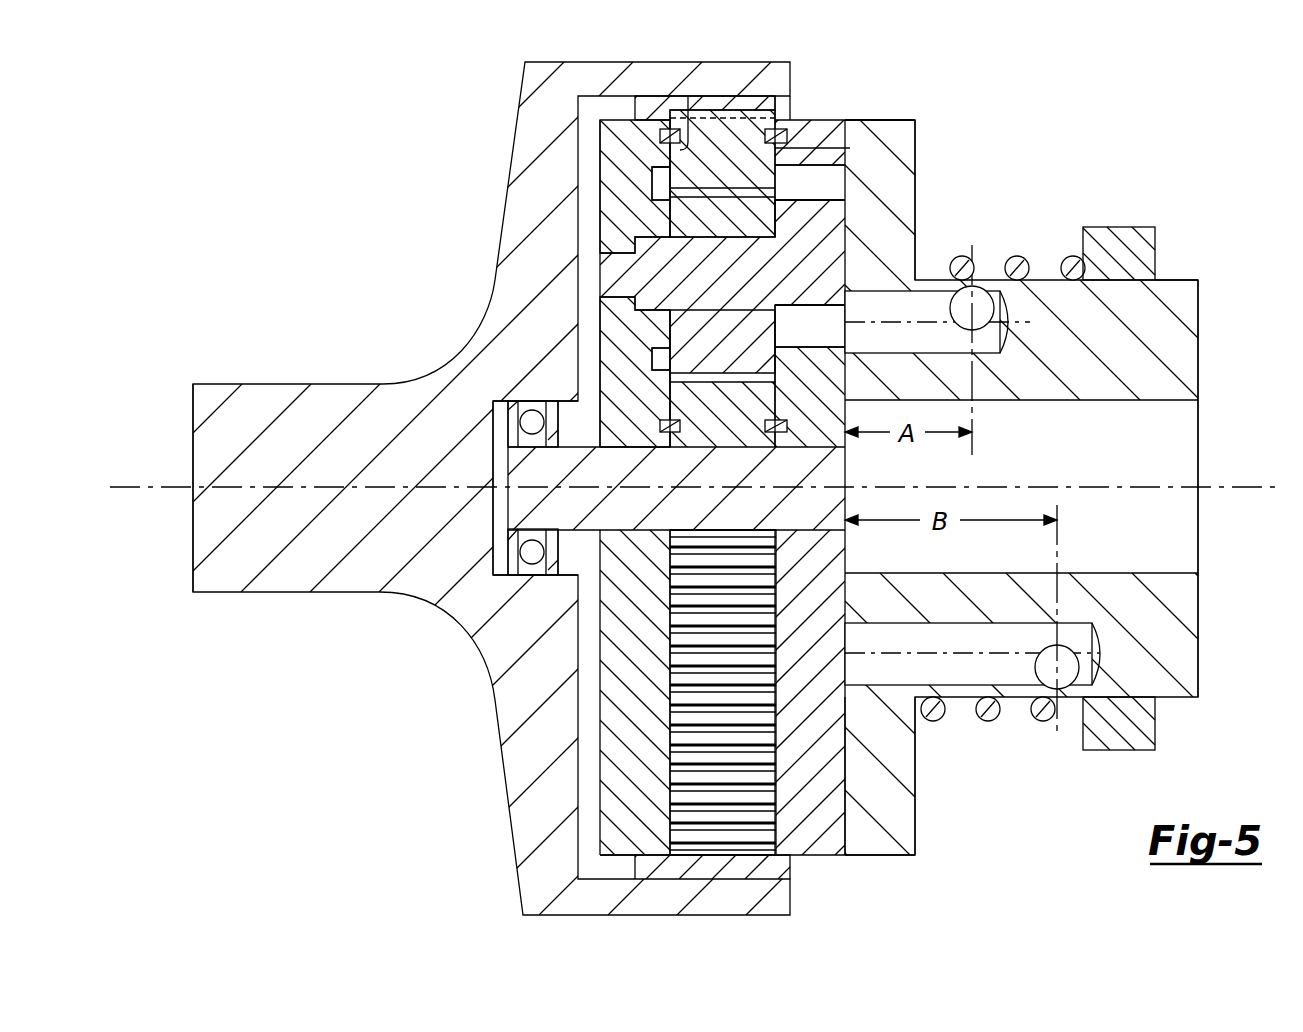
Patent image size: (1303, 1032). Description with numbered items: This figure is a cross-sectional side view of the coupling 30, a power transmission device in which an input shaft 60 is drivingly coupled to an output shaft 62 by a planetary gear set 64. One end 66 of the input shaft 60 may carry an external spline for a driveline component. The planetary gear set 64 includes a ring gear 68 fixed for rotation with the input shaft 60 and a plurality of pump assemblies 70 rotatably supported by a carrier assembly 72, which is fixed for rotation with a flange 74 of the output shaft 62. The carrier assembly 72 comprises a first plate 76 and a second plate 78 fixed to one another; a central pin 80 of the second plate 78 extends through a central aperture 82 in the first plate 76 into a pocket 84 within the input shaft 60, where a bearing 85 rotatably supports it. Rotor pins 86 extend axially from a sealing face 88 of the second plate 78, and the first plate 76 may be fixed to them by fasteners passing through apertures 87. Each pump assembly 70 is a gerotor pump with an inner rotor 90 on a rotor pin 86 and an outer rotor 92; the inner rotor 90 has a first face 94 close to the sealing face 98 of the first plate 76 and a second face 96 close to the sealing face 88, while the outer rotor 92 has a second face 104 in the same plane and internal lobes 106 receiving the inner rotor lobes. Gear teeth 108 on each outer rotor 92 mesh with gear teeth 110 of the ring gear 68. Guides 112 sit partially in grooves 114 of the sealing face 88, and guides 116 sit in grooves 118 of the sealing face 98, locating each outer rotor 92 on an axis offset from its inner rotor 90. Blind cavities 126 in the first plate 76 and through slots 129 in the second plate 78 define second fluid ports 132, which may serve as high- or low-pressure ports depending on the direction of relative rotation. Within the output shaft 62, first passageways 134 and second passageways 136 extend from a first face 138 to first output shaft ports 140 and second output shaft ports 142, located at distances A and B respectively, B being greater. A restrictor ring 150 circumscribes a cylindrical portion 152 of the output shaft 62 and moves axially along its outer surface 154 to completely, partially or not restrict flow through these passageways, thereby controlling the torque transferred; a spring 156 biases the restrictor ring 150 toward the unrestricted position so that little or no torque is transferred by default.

The coupling 30 is at (1010, 132).
The input shaft 60 is at (500, 218).
The output shaft 62 is at (1212, 290).
The planetary gear set 64 is at (805, 98).
The end of input shaft 66 is at (227, 384).
The ring gear 68 is at (760, 865).
The pump assembly 70 is at (792, 818).
The carrier assembly 72 is at (838, 100).
The flange 74 is at (925, 820).
The first plate 76 is at (603, 115).
The second plate 78 is at (860, 128).
The central pin 80 is at (515, 455).
The central aperture 82 is at (640, 447).
The pocket 84 is at (505, 565).
The bearing 85 is at (513, 405).
The rotor pin 86 is at (840, 325).
The aperture 87 is at (615, 297).
The sealing face 88 is at (770, 815).
The inner rotor 90 is at (760, 192).
The outer rotor 92 is at (745, 110).
The first face 94 is at (630, 210).
The second face 96 is at (830, 145).
The sealing face 98 is at (690, 100).
The second face 104 is at (810, 185).
The internal lobes 106 is at (707, 192).
The gear teeth 108 is at (658, 100).
The gear teeth 110 is at (640, 855).
The guides 112 is at (780, 428).
The grooves 114 is at (755, 430).
The guides 116 is at (665, 428).
The grooves 118 is at (680, 420).
The second blind cavities 126 is at (650, 190).
The second through slots 129 is at (875, 155).
The second fluid ports 132 is at (648, 172).
The first passageways 134 is at (898, 293).
The second passageways 136 is at (958, 665).
The first face 138 is at (825, 795).
The first output shaft ports 140 is at (985, 300).
The second output shaft ports 142 is at (1065, 665).
The restrictor ring 150 is at (1135, 228).
The cylindrical portion 152 is at (1210, 360).
The outer surface 154 is at (1180, 278).
The spring 156 is at (1030, 260).